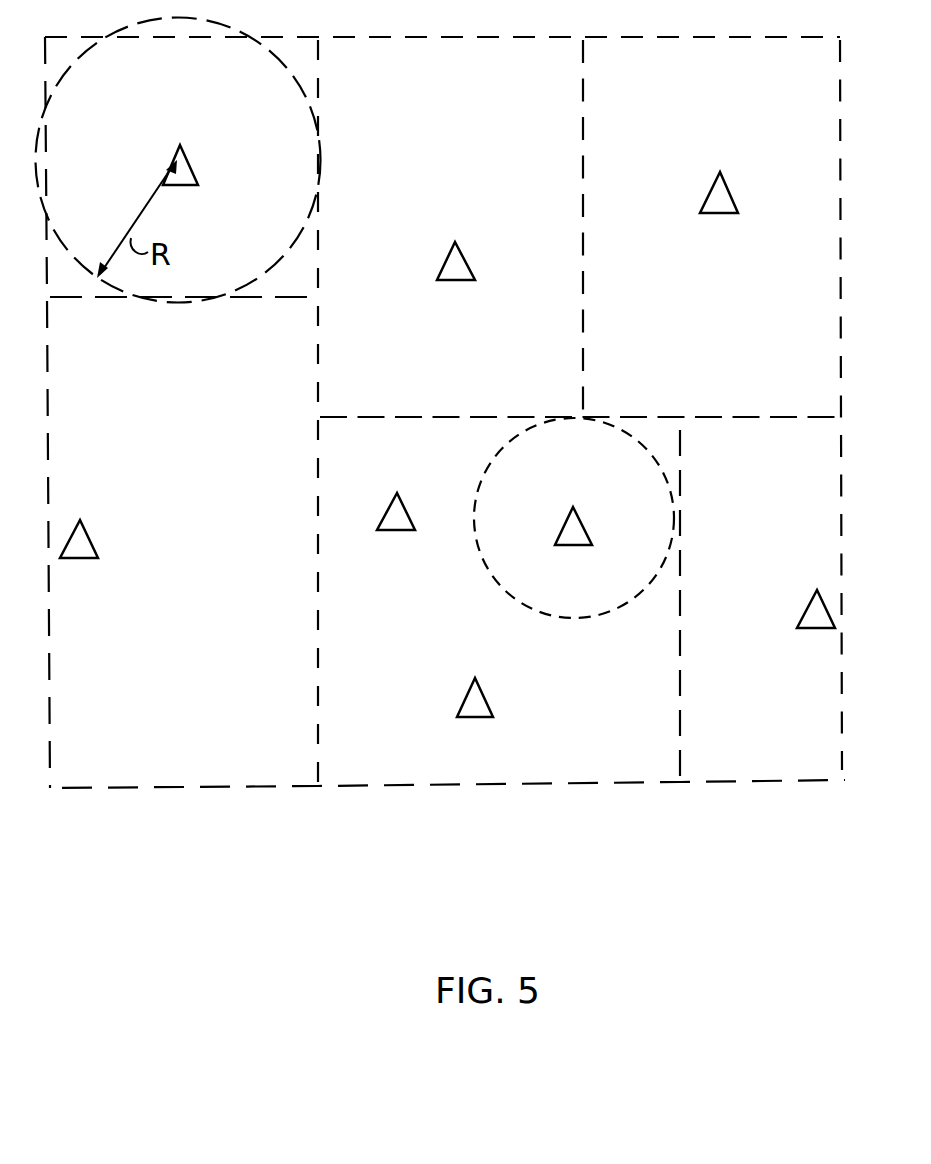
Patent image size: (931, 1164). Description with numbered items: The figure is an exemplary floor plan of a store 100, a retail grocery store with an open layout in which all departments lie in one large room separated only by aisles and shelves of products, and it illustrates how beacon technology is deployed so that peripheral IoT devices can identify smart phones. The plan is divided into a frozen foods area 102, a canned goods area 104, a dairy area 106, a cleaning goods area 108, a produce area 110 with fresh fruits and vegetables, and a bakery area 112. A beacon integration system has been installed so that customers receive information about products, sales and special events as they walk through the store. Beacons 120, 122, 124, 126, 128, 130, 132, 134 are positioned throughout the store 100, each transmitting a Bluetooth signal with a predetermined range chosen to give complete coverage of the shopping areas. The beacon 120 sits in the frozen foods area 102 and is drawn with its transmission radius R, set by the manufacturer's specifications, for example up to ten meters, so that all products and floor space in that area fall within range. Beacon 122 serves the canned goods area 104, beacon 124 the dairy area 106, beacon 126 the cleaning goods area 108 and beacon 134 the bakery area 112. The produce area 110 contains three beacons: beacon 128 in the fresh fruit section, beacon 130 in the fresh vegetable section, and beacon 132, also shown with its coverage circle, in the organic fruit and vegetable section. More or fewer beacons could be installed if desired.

The store 100 is at (628, 809).
The frozen foods area 102 is at (150, 113).
The canned goods area 104 is at (417, 106).
The dairy area 106 is at (678, 104).
The cleaning goods area 108 is at (135, 776).
The produce area 110 is at (408, 773).
The bakery area 112 is at (762, 773).
The beacon 120 is at (183, 150).
The beacon 122 is at (448, 268).
The beacon 124 is at (718, 212).
The beacon 126 is at (80, 547).
The beacon 128 is at (395, 513).
The beacon 130 is at (480, 705).
The beacon 132 is at (573, 532).
The beacon 134 is at (815, 615).